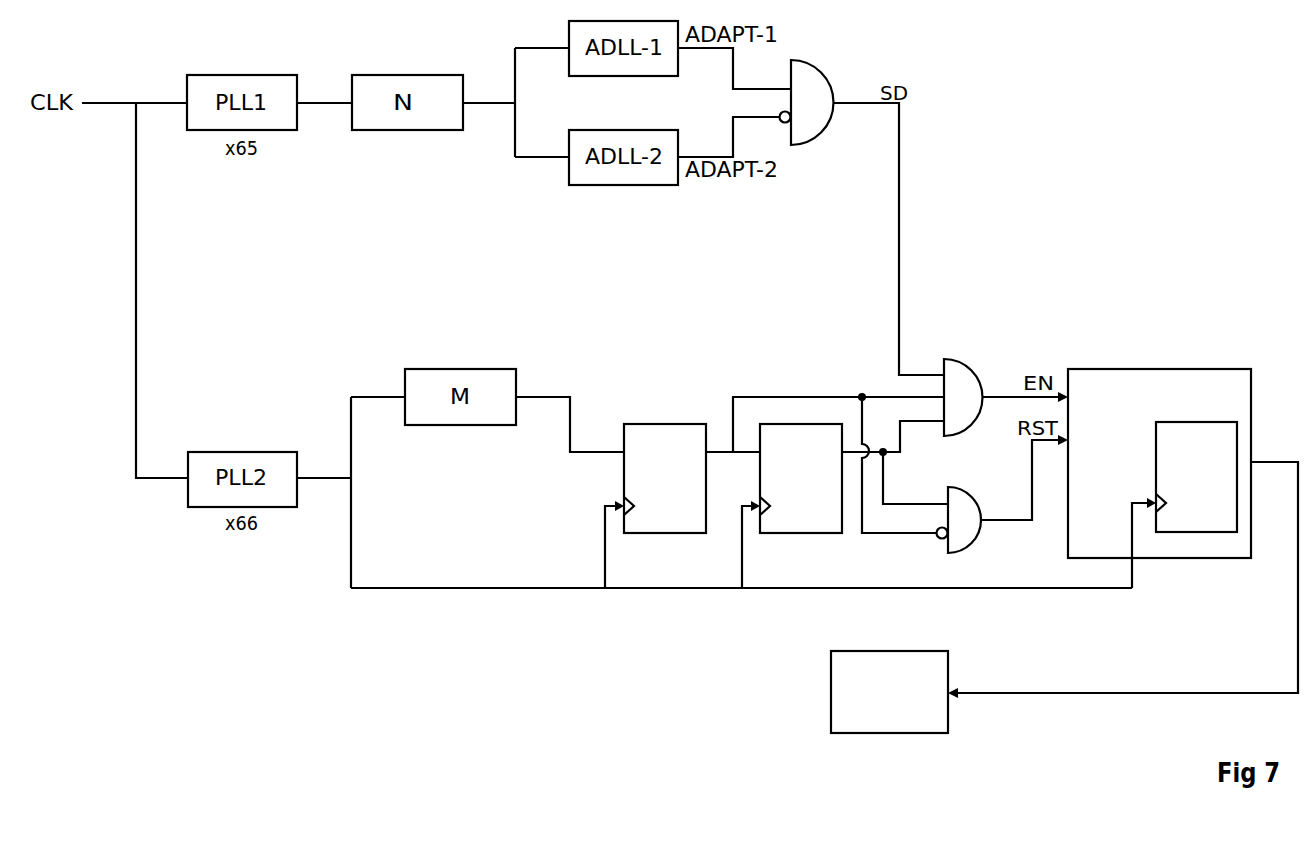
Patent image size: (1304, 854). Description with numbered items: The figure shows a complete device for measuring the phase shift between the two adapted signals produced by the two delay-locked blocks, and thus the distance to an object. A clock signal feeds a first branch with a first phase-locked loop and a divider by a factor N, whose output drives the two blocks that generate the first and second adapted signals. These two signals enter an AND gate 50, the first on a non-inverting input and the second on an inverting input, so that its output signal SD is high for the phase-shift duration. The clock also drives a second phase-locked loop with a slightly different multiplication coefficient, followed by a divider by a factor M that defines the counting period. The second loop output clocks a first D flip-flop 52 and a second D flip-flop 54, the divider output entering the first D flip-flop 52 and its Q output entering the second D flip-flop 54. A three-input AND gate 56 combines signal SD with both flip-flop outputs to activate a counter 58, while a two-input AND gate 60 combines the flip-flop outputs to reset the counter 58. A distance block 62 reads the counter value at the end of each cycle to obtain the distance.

The AND gate 50 is at (827, 76).
The first D flip-flop 52 is at (675, 424).
The second D flip-flop 54 is at (788, 424).
The three-input AND gate 56 is at (970, 360).
The counter 58 is at (1105, 369).
The two-input AND gate 60 is at (975, 540).
The distance block 62 is at (910, 651).